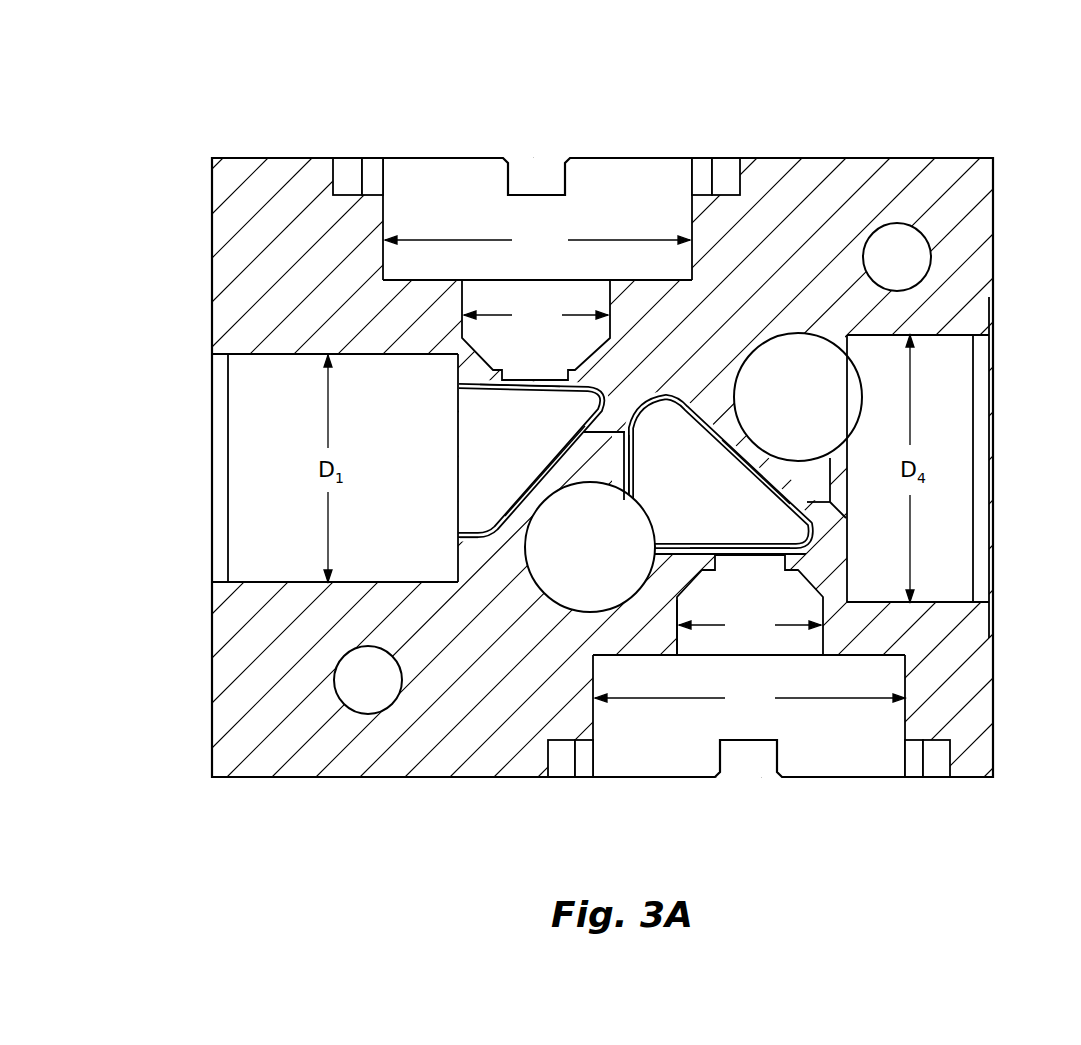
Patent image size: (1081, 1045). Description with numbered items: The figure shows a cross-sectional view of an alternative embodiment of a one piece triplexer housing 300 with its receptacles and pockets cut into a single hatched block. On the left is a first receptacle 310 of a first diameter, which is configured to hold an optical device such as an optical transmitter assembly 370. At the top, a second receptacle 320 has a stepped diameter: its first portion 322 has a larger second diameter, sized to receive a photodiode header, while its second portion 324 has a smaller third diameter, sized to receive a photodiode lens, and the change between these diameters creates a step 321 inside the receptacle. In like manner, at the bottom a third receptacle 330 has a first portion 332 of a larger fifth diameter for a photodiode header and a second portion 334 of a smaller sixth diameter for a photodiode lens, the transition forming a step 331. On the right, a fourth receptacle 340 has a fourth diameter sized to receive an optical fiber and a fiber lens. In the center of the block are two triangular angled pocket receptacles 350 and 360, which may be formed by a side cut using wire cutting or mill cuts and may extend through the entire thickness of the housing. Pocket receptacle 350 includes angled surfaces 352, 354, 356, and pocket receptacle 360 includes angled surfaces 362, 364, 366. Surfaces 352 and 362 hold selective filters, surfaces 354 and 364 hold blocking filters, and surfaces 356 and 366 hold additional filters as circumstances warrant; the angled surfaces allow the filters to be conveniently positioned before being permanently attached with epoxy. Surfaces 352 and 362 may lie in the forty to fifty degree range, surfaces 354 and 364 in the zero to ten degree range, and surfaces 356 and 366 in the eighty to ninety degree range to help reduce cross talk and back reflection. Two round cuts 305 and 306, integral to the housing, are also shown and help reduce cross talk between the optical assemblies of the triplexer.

The one piece triplexer housing 300 is at (968, 85).
The cut 305 is at (797, 332).
The cut 306 is at (548, 602).
The first receptacle 310 is at (182, 497).
The second receptacle 320 is at (460, 140).
The step 321 is at (694, 280).
The first portion 322 is at (640, 158).
The second portion 324 is at (612, 330).
The third receptacle 330 is at (640, 778).
The step 331 is at (826, 654).
The first portion 332 is at (805, 778).
The second portion 334 is at (672, 640).
The fourth receptacle 340 is at (997, 548).
The angled pocket receptacle 350 is at (735, 430).
The angled surface 352 is at (640, 448).
The angled surface 354 is at (764, 540).
The angled surface 356 is at (770, 470).
The angled pocket receptacle 360 is at (462, 386).
The angled surface 362 is at (540, 470).
The angled surface 364 is at (500, 392).
The angled surface 366 is at (522, 490).
The optical transmitter assembly 370 is at (495, 535).